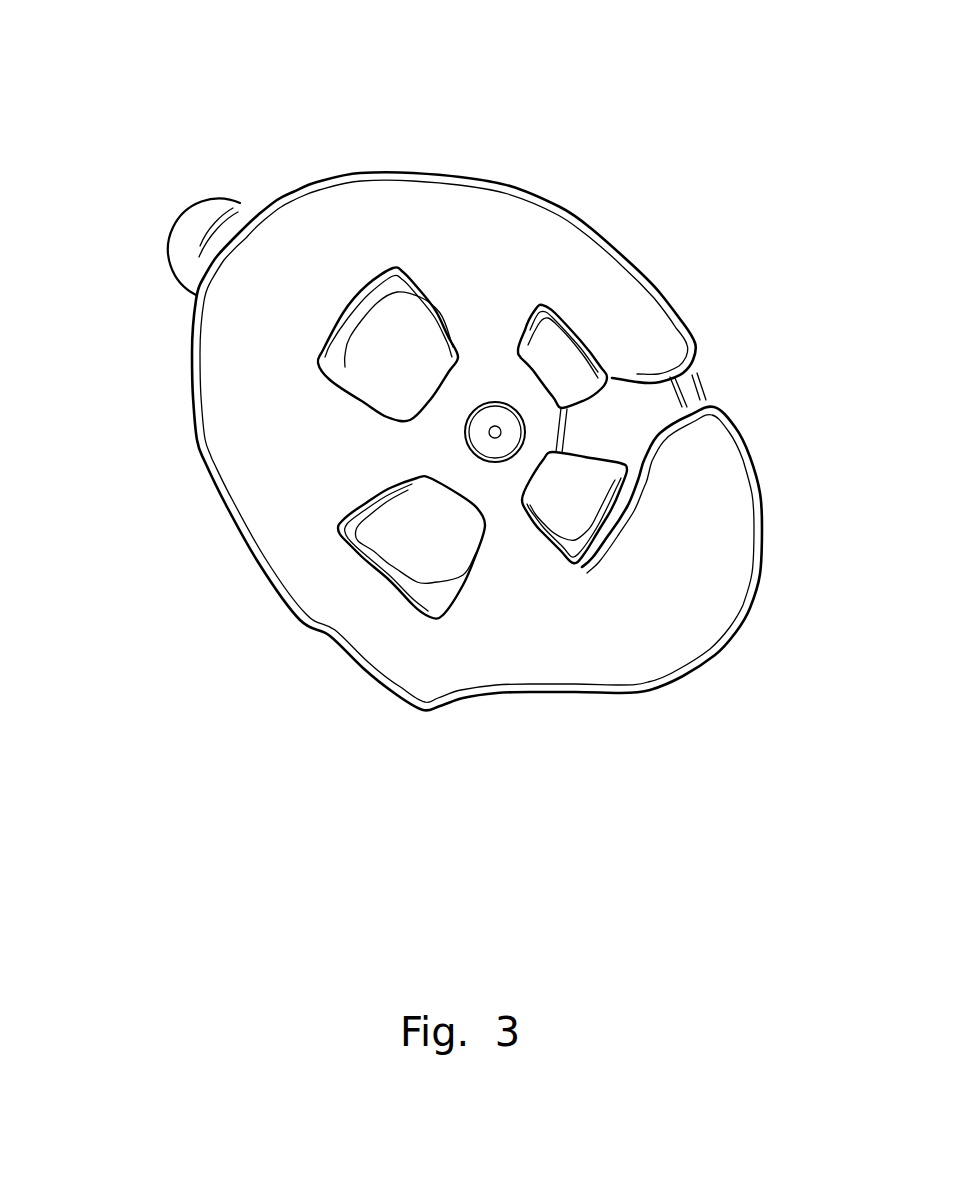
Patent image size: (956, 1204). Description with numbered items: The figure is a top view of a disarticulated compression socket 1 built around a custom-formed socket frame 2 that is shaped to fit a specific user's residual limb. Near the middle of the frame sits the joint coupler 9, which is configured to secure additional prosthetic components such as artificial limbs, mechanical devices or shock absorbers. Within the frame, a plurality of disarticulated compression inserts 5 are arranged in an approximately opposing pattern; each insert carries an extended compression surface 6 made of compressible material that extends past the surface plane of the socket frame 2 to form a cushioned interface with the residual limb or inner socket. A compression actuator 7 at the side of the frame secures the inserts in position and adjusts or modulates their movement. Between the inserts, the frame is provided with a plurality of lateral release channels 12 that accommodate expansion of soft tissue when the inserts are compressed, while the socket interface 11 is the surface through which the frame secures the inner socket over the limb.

The disarticulated compression socket 1 is at (448, 432).
The socket frame 2 is at (262, 195).
The disarticulated compression insert 5 is at (322, 344).
The extended compression surface 6 is at (405, 350).
The compression actuator 7 is at (190, 222).
The joint coupler 9 is at (490, 417).
The socket interface 11 is at (320, 473).
The lateral release channel 12 is at (485, 266).